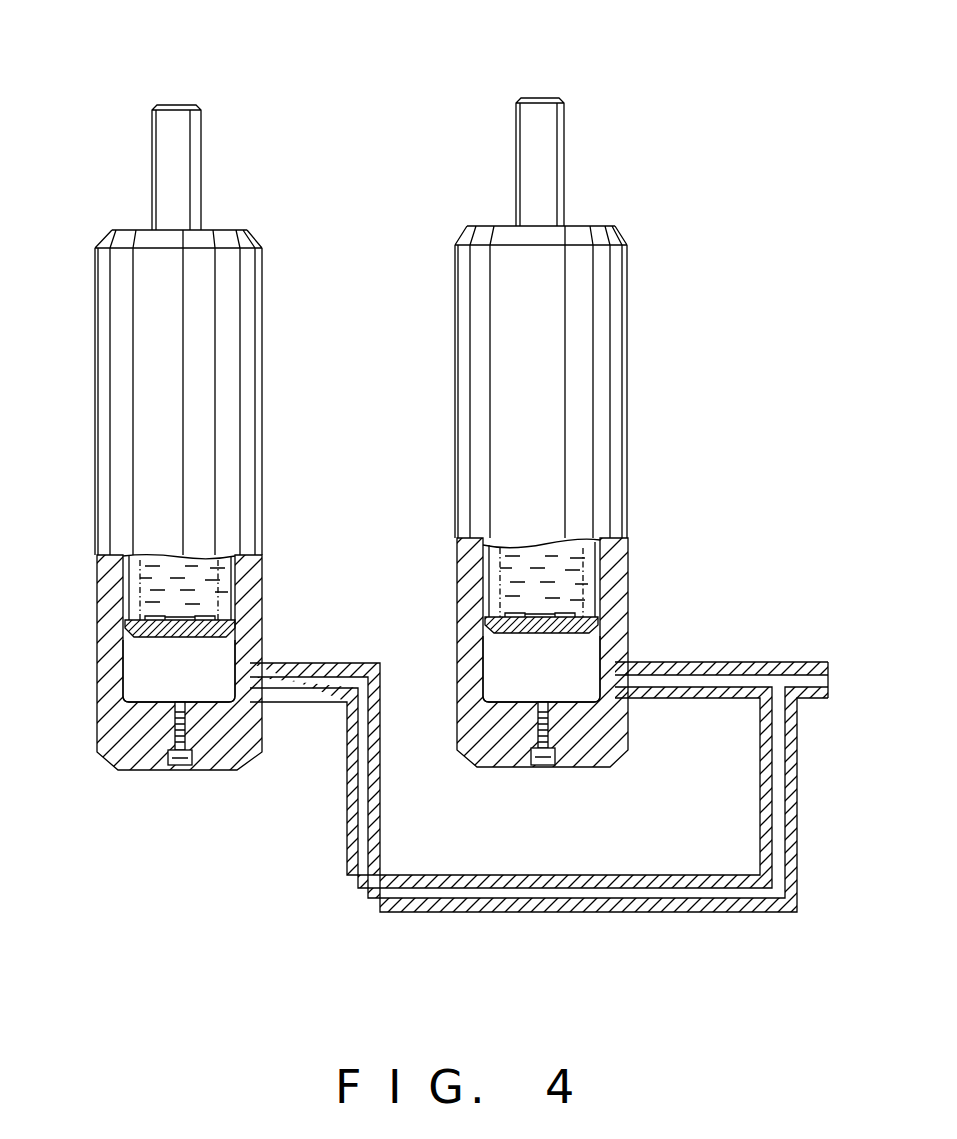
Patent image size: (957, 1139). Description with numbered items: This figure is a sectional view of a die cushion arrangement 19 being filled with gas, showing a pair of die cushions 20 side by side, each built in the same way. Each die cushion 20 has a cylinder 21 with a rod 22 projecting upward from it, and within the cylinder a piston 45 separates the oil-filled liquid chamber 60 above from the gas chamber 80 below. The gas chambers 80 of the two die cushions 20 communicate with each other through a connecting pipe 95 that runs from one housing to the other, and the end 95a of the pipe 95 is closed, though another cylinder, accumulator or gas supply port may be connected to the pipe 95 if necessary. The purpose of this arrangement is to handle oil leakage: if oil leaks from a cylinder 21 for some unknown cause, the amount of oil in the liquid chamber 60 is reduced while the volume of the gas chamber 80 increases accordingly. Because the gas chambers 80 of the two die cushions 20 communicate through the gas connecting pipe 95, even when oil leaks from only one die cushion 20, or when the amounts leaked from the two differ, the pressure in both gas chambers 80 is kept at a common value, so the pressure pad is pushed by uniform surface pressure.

The hydraulic actuator assembly 19 is at (452, 102).
The die cushion 20 is at (268, 273).
The cylinder 21 is at (247, 487).
The piston rod 22 is at (198, 133).
The piston 45 is at (227, 600).
The liquid chamber 60 is at (207, 578).
The gas chamber 80 is at (130, 667).
The connecting pipe 95 is at (492, 890).
The end of pipe 95a is at (827, 670).